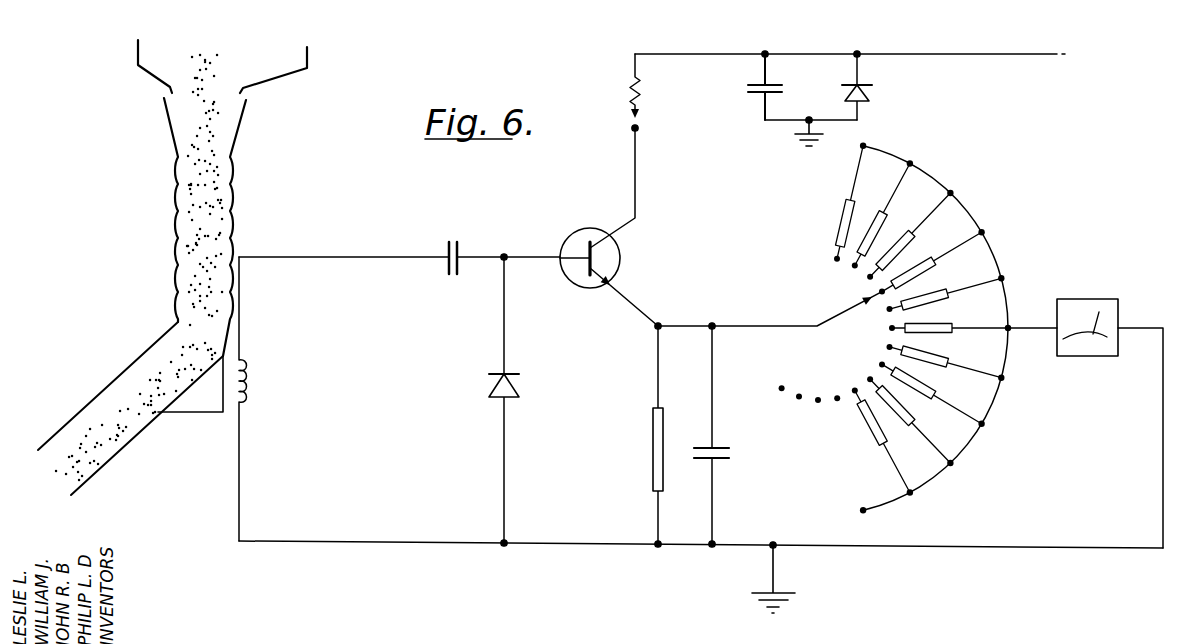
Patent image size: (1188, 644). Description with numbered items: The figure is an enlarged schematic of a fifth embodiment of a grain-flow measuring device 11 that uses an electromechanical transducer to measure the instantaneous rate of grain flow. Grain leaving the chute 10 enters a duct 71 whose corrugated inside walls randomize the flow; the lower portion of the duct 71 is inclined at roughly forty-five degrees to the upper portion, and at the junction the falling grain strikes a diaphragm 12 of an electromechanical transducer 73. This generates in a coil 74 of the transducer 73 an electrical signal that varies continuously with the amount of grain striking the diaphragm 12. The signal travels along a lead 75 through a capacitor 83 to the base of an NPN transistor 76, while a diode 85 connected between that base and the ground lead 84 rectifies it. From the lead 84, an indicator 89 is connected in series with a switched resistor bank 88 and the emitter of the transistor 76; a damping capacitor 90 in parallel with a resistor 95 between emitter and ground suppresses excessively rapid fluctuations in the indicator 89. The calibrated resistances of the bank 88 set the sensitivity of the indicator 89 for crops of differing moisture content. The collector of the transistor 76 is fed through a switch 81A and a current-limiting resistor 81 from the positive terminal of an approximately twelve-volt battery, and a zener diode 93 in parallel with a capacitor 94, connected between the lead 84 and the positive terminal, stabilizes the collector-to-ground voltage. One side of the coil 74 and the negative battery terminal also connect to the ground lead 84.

The chute 10 is at (158, 84).
The duct 71 is at (175, 183).
The grain-flow measuring device 11 is at (155, 340).
The sensing element 12 is at (182, 397).
The electromechanical transducer 73 is at (226, 418).
The coil 74 is at (244, 388).
The lead 75 is at (317, 255).
The capacitor 83 is at (459, 256).
The diode 85 is at (505, 373).
The transistor 76 is at (622, 259).
The current-limiting resistor 81 is at (627, 94).
The switch 81A is at (632, 130).
The capacitor 94 is at (762, 90).
The zener diode 93 is at (866, 95).
The switched resistor bank 88 is at (1000, 262).
The indicator 89 is at (1119, 320).
The resistor 95 is at (652, 437).
The damping capacitor 90 is at (714, 448).
The lead 84 is at (432, 545).